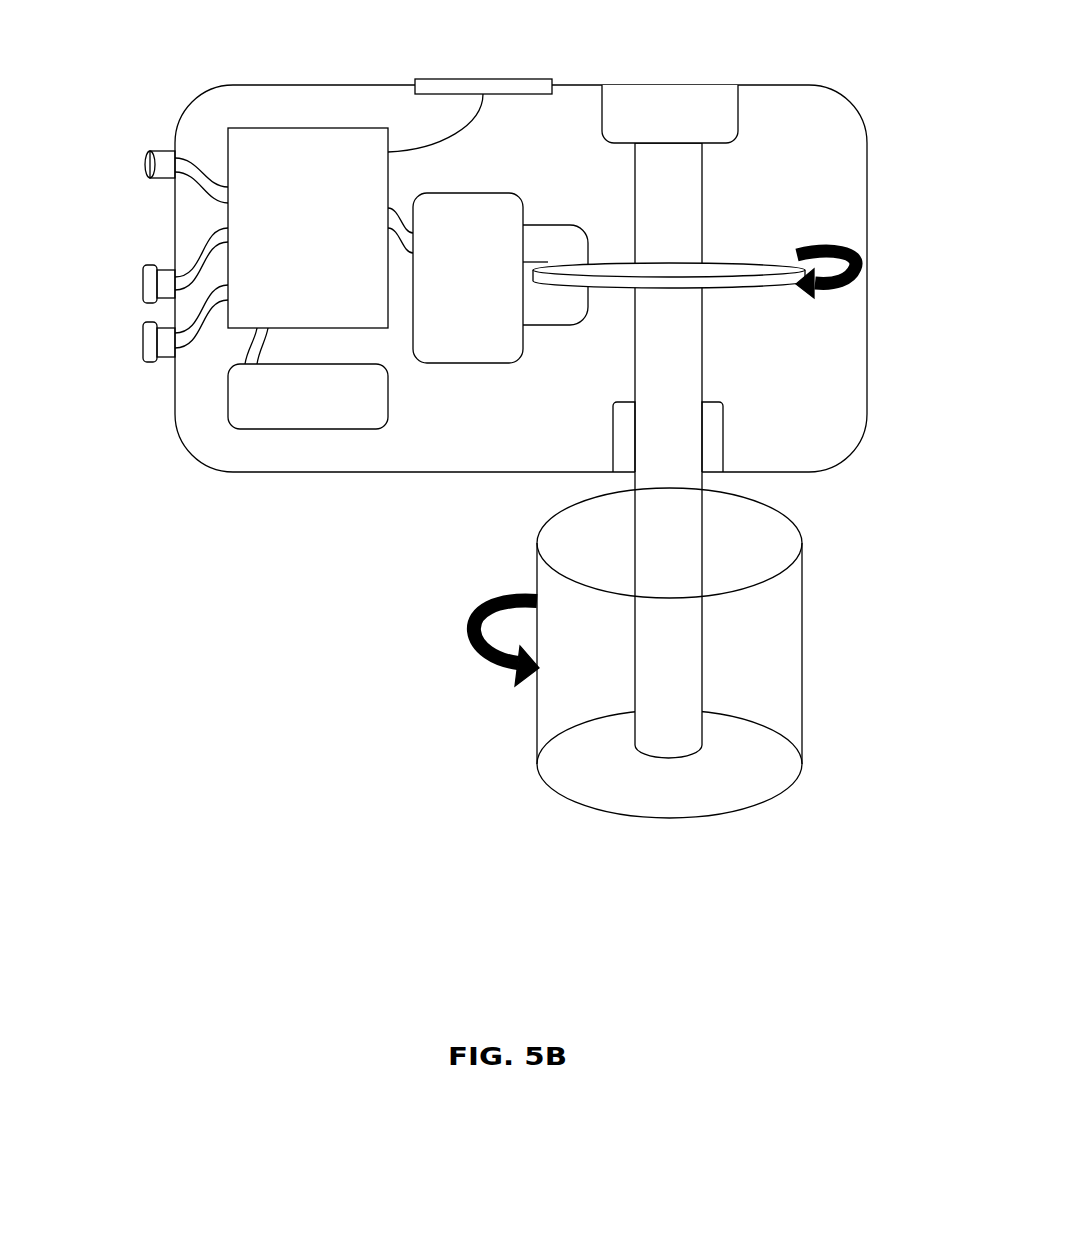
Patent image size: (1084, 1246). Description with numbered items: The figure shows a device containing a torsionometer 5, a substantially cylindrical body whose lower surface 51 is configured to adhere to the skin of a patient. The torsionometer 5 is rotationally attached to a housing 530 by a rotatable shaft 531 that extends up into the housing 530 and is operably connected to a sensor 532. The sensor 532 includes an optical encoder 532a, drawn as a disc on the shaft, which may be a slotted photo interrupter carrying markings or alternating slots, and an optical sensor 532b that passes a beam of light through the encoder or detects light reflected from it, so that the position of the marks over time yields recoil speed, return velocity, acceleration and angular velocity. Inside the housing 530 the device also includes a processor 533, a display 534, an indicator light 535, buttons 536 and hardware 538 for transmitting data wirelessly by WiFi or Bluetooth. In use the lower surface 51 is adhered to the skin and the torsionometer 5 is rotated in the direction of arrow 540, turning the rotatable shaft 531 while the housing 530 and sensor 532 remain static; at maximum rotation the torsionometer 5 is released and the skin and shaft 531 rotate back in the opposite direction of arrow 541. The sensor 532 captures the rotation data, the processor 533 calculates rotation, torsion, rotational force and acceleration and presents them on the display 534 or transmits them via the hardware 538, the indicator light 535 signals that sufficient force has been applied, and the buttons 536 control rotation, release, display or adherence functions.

The torsionometer 5 is at (702, 517).
The lower surface 51 is at (680, 819).
The housing 530 is at (863, 172).
The rotatable shaft 531 is at (673, 537).
The sensor 532 is at (558, 243).
The optical encoder 532a is at (763, 283).
The optical sensor 532b is at (480, 228).
The processor 533 is at (284, 160).
The display 534 is at (495, 78).
The indicator light 535 is at (147, 170).
The buttons 536 is at (143, 303).
The hardware for transmitting data 538 is at (275, 405).
The arrow 540 is at (462, 650).
The arrow 541 is at (853, 263).